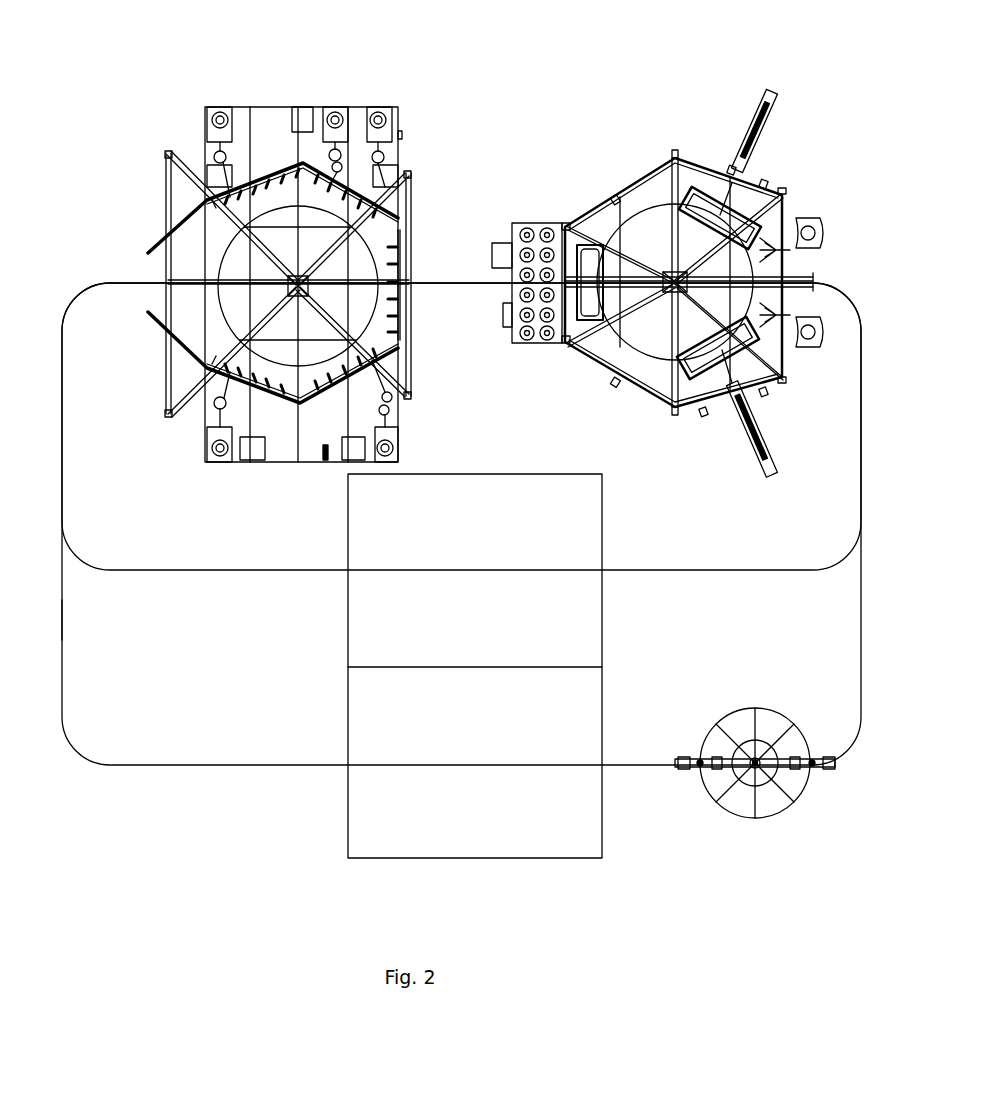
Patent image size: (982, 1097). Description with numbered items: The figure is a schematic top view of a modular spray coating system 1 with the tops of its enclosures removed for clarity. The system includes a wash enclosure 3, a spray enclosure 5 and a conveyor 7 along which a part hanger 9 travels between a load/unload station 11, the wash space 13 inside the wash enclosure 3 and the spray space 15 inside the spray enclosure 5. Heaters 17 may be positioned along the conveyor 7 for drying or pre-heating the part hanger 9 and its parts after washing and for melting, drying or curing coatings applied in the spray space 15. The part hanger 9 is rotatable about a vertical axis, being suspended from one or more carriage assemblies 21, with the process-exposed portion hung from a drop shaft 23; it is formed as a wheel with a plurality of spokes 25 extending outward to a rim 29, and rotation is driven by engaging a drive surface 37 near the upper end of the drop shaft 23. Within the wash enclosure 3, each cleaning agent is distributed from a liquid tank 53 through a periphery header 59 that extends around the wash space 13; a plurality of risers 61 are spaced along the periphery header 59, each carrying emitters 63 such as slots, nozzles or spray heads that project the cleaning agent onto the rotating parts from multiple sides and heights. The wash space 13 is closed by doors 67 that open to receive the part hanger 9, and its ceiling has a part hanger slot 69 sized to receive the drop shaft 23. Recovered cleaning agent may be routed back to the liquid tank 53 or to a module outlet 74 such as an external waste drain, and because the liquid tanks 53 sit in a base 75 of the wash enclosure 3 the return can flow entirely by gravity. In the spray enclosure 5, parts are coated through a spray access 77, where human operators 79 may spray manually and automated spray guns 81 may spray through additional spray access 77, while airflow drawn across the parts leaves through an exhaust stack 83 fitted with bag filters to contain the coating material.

The modular spray coating system 1 is at (275, 848).
The wash enclosure 3 is at (275, 105).
The spray enclosure 5 is at (657, 165).
The conveyor 7 is at (240, 571).
The part hanger 9 is at (774, 769).
The load/unload station 11 is at (160, 766).
The wash space 13 is at (326, 298).
The spray space 15 is at (663, 327).
The heaters 17 is at (461, 603).
The carriage assemblies 21 is at (822, 766).
The drop shaft 23 is at (760, 759).
The spokes 25 is at (758, 812).
The rim 29 is at (786, 809).
The drive surface 37 is at (762, 760).
The liquid tank 53 is at (262, 120).
The periphery header 59 is at (394, 334).
The risers 61 is at (394, 266).
The emitters 63 is at (394, 246).
The doors 67 is at (150, 251).
The part hanger slot 69 is at (213, 282).
The module outlet 74 is at (402, 134).
The base 75 is at (218, 118).
The spray access 77 is at (750, 158).
The human operators 79 is at (815, 233).
The automated spray guns 81 is at (732, 183).
The exhaust stack 83 is at (612, 195).